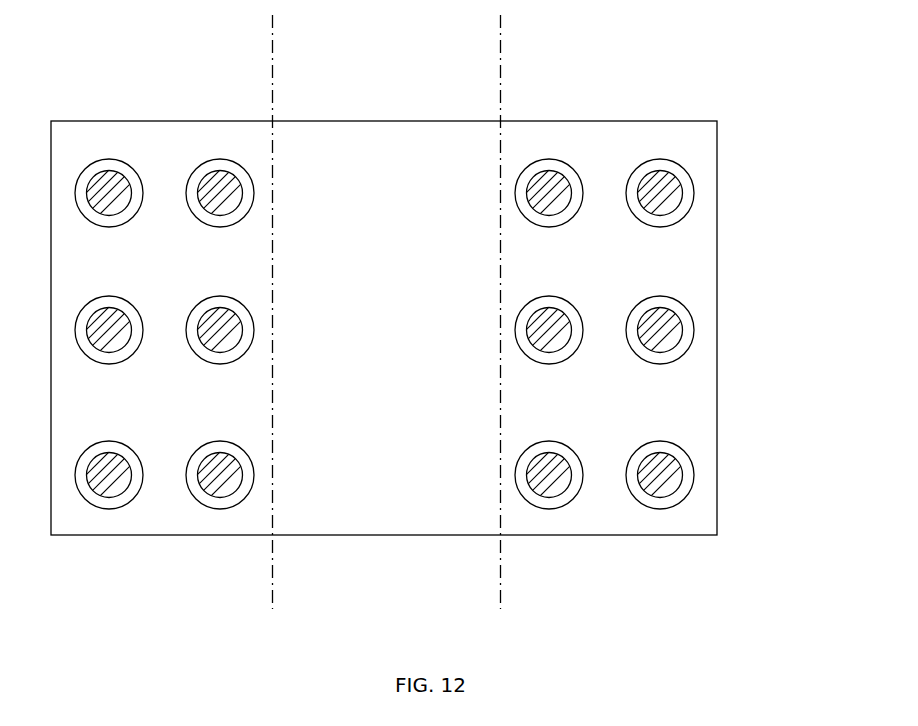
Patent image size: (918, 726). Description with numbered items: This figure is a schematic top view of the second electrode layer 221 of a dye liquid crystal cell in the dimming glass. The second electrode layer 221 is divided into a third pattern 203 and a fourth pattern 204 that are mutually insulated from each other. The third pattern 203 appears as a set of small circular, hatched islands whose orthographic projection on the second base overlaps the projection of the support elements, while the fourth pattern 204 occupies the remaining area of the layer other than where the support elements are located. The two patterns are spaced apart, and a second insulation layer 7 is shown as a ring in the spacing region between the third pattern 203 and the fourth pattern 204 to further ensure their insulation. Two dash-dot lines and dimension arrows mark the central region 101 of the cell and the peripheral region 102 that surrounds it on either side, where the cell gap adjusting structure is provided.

The second electrode layer 221 is at (695, 135).
The fourth pattern 204 is at (688, 255).
The second insulation layer 7 is at (665, 300).
The third pattern 203 is at (670, 318).
The central region 101 is at (500, 558).
The peripheral region 102 is at (272, 585).